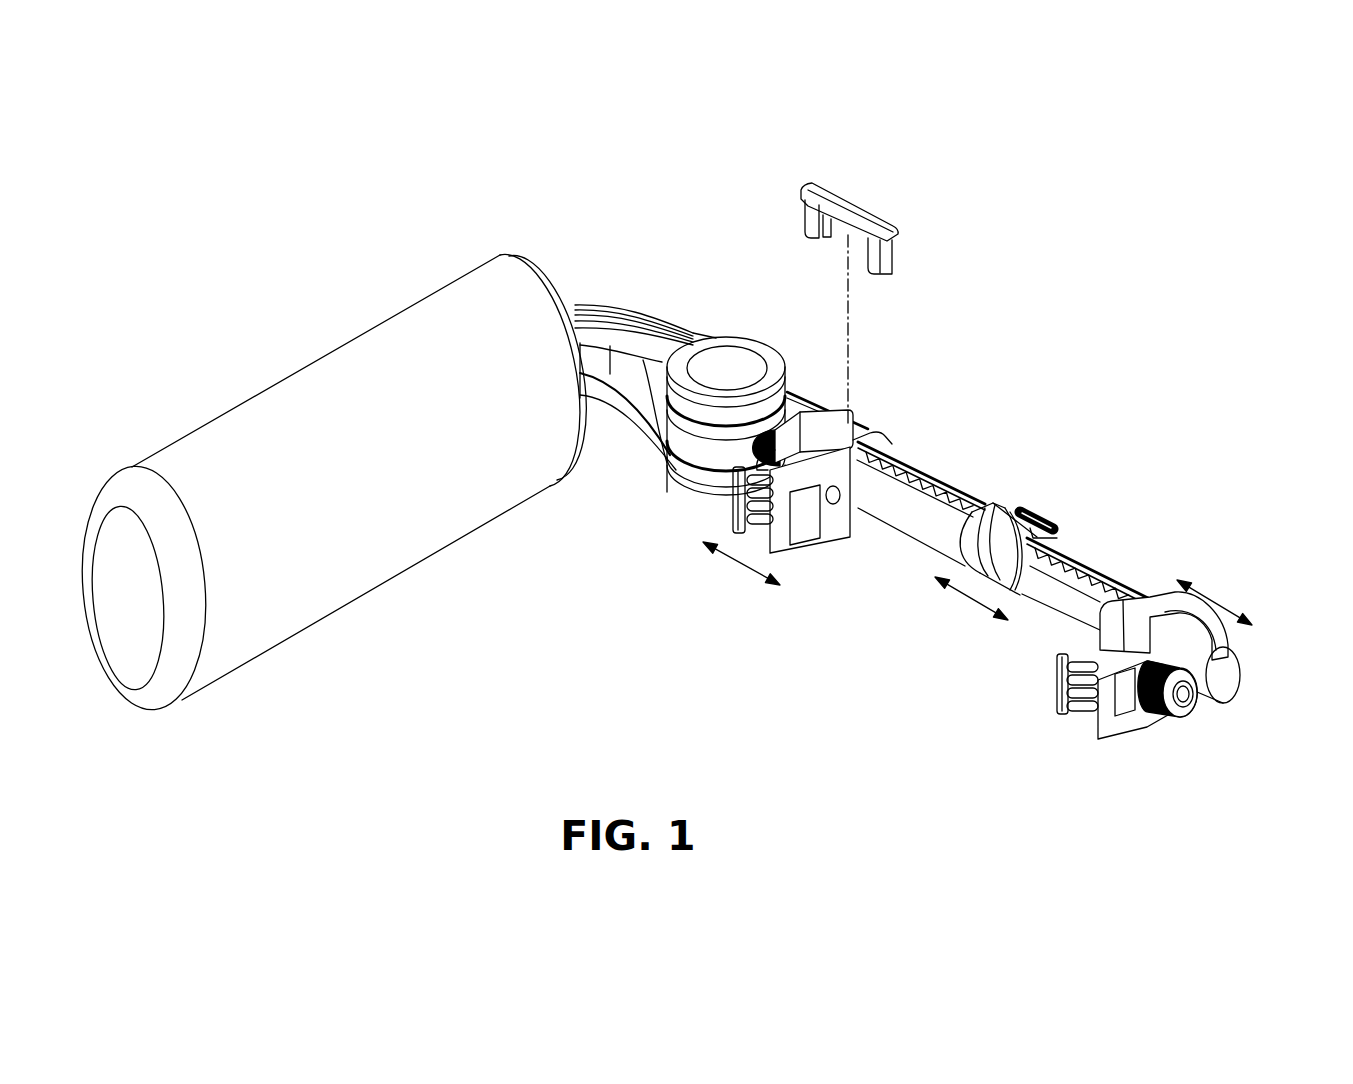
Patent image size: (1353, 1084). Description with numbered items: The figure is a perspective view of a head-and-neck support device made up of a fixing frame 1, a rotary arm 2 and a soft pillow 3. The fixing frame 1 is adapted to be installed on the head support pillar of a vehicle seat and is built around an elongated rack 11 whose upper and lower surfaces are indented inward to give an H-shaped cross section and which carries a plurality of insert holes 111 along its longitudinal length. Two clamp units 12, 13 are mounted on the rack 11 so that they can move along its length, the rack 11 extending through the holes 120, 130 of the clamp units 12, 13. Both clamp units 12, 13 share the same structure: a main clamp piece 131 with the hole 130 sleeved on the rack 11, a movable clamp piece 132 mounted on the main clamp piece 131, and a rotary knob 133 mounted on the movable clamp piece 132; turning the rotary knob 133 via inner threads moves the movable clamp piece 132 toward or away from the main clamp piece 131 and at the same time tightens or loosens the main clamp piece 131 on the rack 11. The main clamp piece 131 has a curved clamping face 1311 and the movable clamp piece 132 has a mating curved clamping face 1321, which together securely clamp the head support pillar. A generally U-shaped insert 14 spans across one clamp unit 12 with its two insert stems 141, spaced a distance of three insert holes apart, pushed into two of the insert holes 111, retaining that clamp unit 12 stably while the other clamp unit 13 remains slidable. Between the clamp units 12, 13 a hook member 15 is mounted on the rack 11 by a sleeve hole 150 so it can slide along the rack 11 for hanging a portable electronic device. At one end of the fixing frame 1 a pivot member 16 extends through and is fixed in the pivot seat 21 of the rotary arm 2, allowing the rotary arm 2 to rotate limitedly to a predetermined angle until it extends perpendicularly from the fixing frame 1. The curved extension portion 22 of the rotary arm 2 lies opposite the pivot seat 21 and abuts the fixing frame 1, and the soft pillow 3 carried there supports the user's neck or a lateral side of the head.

The fixing frame 1 is at (1008, 491).
The rack 11 is at (972, 511).
The insert holes 111 is at (883, 442).
The clamp unit 12 is at (812, 416).
The hole 120 is at (857, 490).
The clamp unit 13 is at (1087, 664).
The hole 130 is at (1217, 675).
The main clamp piece 131 is at (1110, 717).
The movable clamp piece 132 is at (1063, 670).
The mating curved clamping face 1321 is at (1067, 660).
The rotary knob 133 is at (1133, 733).
The curved clamping face 1311 is at (1130, 645).
The U-shaped insert 14 is at (852, 289).
The insert stems 141 is at (817, 224).
The hook member 15 is at (1023, 510).
The sleeve hole 150 is at (1020, 597).
The pivot member 16 is at (683, 452).
The rotary arm 2 is at (680, 328).
The pivot seat 21 is at (725, 317).
The curved extension portion 22 is at (592, 310).
The soft pillow 3 is at (235, 399).